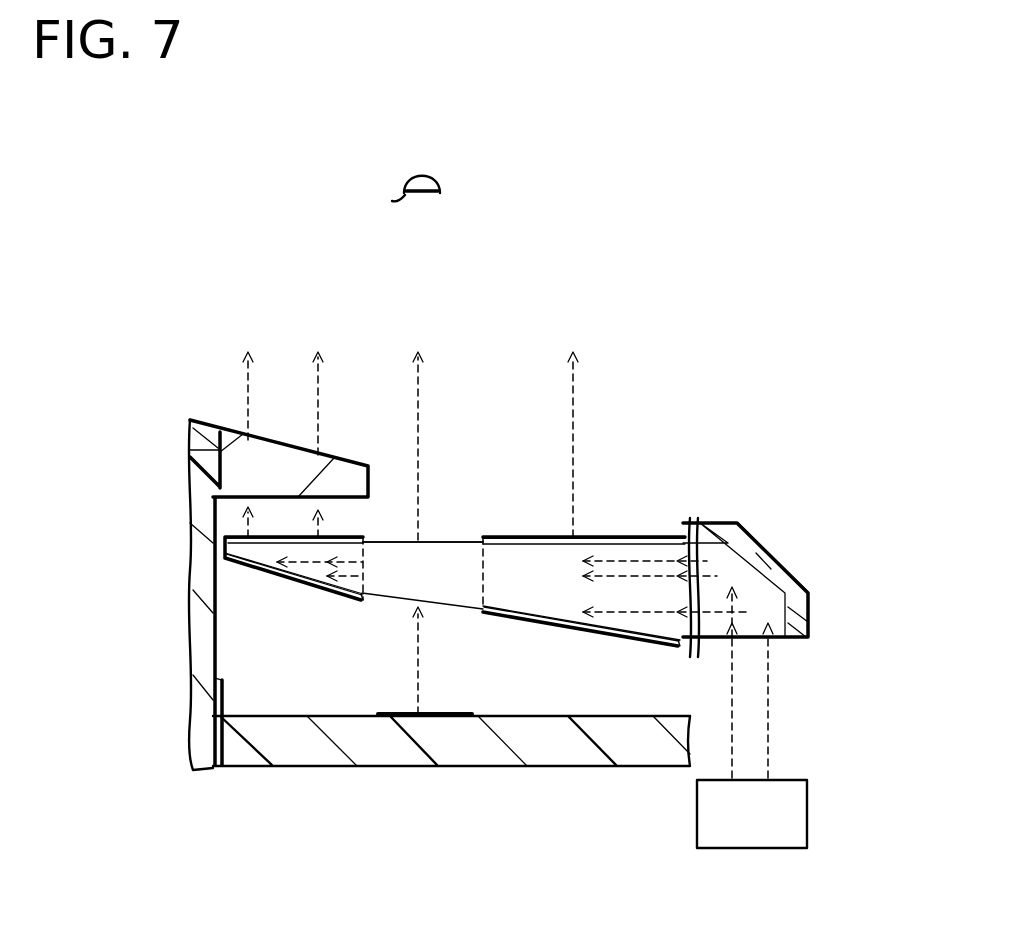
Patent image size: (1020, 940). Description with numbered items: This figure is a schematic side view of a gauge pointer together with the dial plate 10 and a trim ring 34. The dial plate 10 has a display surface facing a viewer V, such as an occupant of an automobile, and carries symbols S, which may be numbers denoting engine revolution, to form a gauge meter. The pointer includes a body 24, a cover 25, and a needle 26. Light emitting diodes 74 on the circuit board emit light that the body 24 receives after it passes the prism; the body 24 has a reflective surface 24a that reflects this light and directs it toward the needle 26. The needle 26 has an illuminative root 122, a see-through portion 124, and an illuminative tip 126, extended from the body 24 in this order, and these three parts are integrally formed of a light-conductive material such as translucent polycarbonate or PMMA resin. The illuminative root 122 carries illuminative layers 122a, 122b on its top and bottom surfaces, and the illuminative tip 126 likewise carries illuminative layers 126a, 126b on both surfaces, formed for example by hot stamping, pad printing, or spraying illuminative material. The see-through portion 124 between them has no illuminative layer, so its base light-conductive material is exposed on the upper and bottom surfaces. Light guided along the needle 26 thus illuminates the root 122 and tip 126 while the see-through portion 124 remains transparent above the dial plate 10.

The housing wall / frame 34 is at (223, 430).
The illuminative tip 126 is at (314, 607).
The illuminative layer 126a is at (238, 534).
The illuminative layer 126b is at (237, 560).
The see-through portion 124 is at (445, 623).
The illuminative root 122 is at (591, 659).
The illuminative layer 122a is at (614, 533).
The illuminative layer 122b is at (606, 633).
The body 24 is at (793, 608).
The reflective surface 24a is at (776, 558).
The cover 25 is at (758, 546).
The needle 26 is at (638, 430).
The viewer V is at (433, 176).
The light emitting diodes 74 is at (808, 816).
The dial plate 10 is at (462, 767).
The symbols S is at (432, 767).